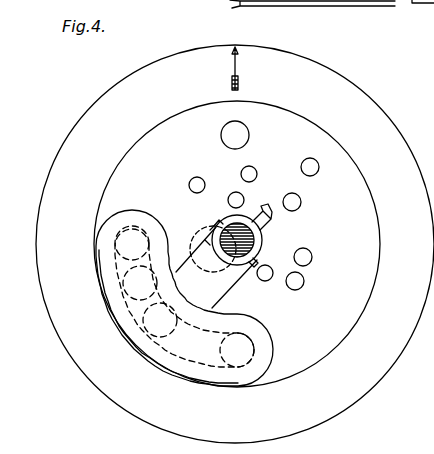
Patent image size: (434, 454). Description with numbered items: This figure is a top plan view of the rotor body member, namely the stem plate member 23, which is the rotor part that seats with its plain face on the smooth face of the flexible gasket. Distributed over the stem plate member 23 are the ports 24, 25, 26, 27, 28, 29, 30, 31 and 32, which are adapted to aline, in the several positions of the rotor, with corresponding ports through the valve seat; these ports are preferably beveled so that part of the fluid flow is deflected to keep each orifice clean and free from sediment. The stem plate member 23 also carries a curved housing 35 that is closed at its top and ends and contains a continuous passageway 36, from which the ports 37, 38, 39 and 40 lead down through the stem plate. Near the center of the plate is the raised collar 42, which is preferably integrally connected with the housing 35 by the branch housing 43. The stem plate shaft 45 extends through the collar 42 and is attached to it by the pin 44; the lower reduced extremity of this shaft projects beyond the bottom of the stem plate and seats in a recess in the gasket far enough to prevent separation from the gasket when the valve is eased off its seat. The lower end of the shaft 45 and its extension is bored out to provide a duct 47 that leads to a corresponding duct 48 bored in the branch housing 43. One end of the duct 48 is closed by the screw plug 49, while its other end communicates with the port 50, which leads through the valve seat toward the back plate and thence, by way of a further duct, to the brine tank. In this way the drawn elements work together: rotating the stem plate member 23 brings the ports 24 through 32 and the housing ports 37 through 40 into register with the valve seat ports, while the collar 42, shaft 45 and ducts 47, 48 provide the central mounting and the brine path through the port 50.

The stem plate member 23 is at (309, 135).
The port 24 is at (236, 135).
The port 25 is at (314, 173).
The port 26 is at (197, 177).
The port 27 is at (245, 172).
The port 28 is at (294, 202).
The port 29 is at (305, 257).
The port 30 is at (299, 284).
The port 31 is at (236, 196).
The port 32 is at (265, 278).
The housing 35 is at (273, 350).
The continuous passageway 36 is at (177, 357).
The port 37 is at (132, 243).
The port 38 is at (140, 283).
The port 39 is at (160, 320).
The port 40 is at (237, 350).
The raised collar 42 is at (259, 243).
The branch housing 43 is at (216, 269).
The pin 44 is at (218, 220).
The stem plate shaft 45 is at (268, 230).
The duct 47 is at (214, 226).
The duct 48 is at (208, 243).
The screw plug 49 is at (263, 212).
The port 50 is at (204, 273).